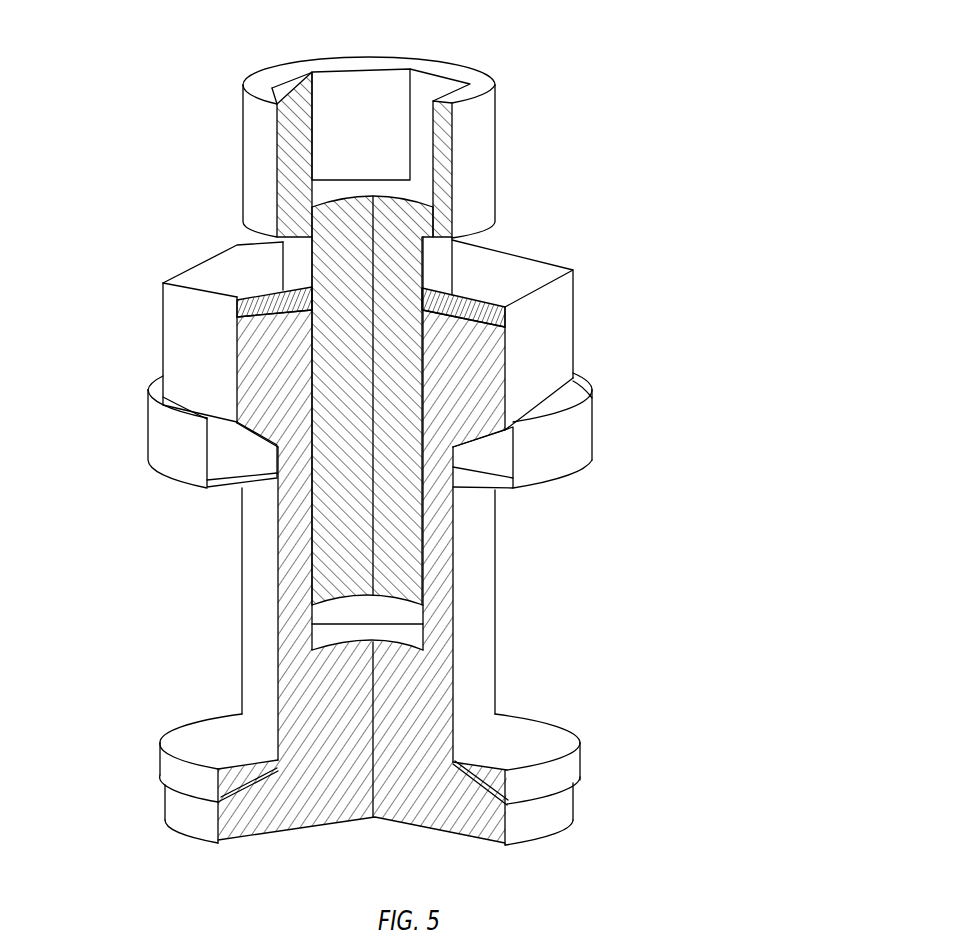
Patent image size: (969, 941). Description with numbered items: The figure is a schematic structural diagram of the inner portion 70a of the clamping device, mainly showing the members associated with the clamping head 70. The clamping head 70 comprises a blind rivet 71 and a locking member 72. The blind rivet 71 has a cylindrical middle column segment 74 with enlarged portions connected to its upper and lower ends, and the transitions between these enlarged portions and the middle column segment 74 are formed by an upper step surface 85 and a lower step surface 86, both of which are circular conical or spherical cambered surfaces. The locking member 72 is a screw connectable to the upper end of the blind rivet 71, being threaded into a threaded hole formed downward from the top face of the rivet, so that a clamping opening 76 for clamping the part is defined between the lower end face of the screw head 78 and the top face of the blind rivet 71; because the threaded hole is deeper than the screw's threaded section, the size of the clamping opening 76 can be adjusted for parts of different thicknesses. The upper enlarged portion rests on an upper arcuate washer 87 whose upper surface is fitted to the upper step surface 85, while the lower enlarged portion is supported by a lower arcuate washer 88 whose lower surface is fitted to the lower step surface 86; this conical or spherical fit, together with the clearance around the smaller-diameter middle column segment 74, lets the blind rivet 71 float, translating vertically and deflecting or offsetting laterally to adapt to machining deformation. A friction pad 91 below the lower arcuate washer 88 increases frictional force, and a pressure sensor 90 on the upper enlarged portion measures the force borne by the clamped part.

The clamping head 70 is at (185, 245).
The inner portion 70a is at (525, 83).
The blind rivet 71 is at (175, 310).
The locking member 72 is at (243, 150).
The middle column segment 74 is at (263, 596).
The clamping opening 76 is at (263, 240).
The screw head 78 is at (473, 155).
The upper step surface 85 is at (228, 430).
The lower step surface 86 is at (238, 790).
The upper arcuate washer 87 is at (562, 428).
The lower arcuate washer 88 is at (552, 777).
The pressure sensor 90 is at (425, 305).
The friction pad 91 is at (575, 455).